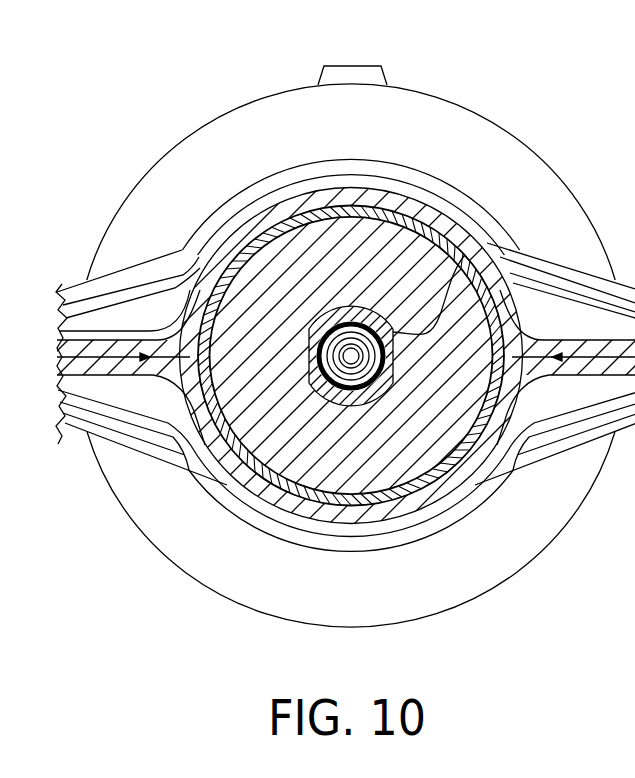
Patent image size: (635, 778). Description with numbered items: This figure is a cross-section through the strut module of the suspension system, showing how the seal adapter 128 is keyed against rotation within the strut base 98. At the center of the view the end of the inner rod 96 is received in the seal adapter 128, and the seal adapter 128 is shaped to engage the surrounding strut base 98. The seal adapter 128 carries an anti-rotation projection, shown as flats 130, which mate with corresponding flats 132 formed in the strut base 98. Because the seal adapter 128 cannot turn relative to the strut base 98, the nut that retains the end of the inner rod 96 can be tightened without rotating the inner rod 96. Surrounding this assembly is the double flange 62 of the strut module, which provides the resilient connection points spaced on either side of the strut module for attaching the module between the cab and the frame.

The double flange 62 is at (447, 492).
The inner rod 96 is at (322, 365).
The strut base 98 is at (325, 492).
The seal adapter 128 is at (353, 318).
The flats 130 is at (465, 255).
The flats 132 is at (382, 383).